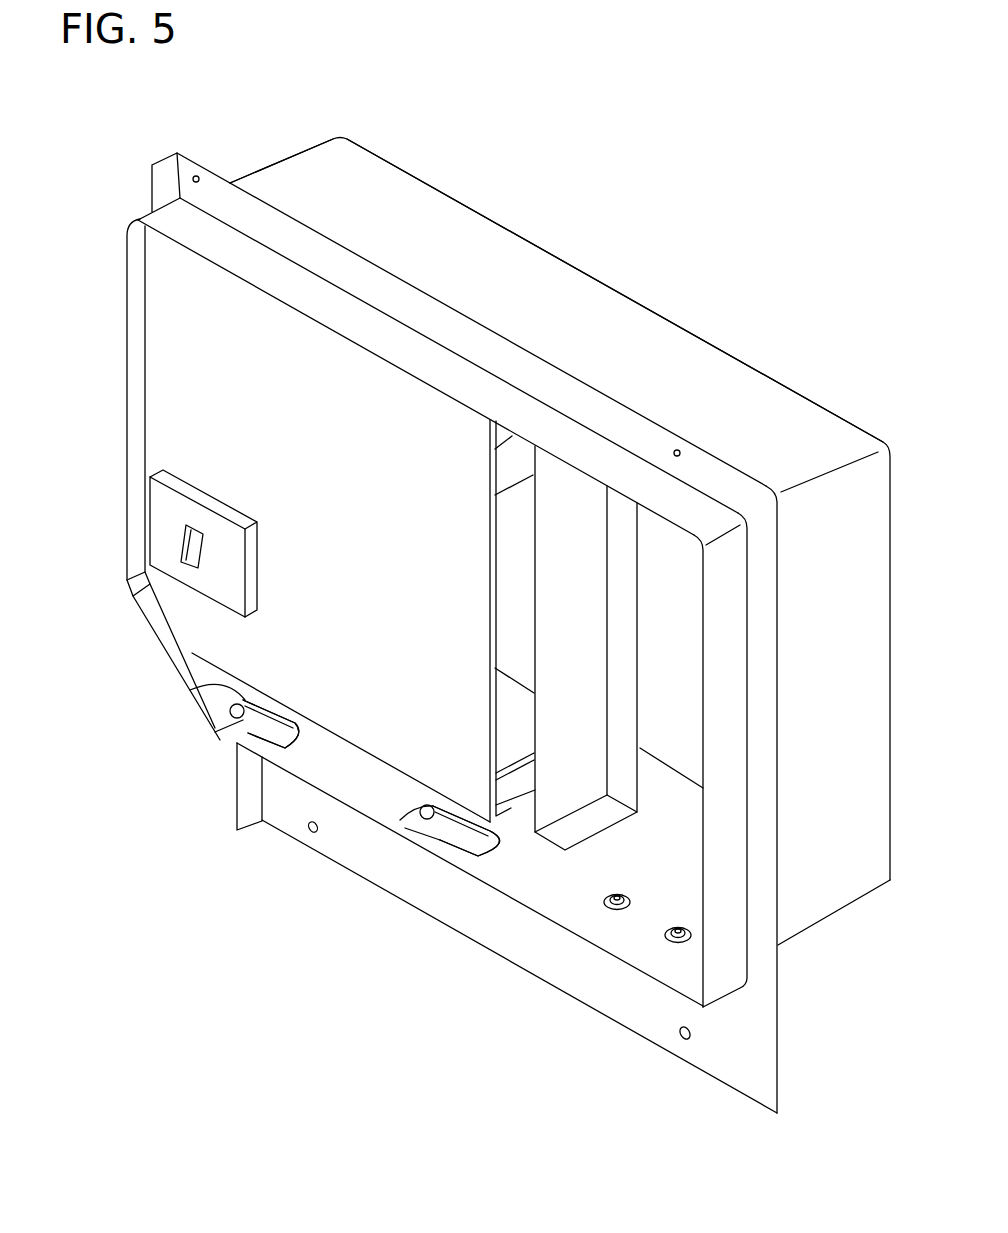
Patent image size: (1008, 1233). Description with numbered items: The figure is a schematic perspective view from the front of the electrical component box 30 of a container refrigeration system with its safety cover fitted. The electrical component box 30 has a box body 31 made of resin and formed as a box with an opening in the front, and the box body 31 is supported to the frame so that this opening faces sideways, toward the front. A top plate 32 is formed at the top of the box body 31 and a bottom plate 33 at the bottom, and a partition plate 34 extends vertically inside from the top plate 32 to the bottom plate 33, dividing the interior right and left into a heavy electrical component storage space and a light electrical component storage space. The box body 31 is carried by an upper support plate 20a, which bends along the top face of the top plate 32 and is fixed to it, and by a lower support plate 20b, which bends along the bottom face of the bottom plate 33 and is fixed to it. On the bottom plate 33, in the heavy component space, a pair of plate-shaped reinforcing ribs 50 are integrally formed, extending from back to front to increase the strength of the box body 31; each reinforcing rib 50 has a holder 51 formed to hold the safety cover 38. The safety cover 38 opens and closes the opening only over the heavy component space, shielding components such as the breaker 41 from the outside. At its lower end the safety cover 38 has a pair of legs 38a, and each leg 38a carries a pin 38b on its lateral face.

The upper support plate 20a is at (582, 407).
The lower support plate 20b is at (545, 950).
The electrical component box 30 is at (772, 362).
The box body 31 is at (832, 930).
The top plate 32 is at (478, 233).
The bottom plate 33 is at (627, 940).
The partition plate 34 is at (589, 632).
The safety cover 38 is at (167, 342).
The leg 38a is at (187, 474).
The pin 38b is at (203, 718).
The breaker 41 is at (167, 523).
The reinforcing rib 50 is at (190, 690).
The holder 51 is at (225, 742).